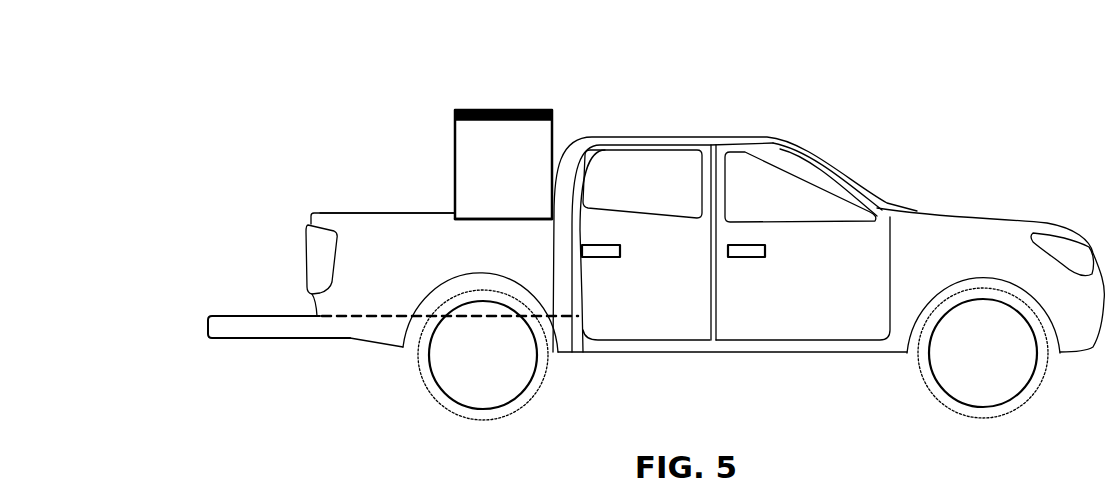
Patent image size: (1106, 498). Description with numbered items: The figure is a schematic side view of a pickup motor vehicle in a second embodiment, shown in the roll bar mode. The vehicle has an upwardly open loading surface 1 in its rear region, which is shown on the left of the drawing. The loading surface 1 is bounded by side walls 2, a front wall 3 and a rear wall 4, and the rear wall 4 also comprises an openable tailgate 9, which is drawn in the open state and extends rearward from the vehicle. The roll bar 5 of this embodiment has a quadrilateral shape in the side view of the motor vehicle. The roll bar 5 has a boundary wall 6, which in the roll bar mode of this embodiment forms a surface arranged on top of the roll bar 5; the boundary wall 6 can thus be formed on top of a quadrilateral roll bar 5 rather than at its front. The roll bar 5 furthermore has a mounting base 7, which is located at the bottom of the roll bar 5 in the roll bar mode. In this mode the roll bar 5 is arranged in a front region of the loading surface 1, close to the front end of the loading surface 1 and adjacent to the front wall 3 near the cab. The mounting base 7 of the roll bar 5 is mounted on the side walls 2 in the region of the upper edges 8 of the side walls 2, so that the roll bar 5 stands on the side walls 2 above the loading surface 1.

The loading surface 1 is at (372, 316).
The side walls 2 is at (400, 235).
The front wall 3 is at (568, 303).
The rear wall 4 is at (308, 230).
The roll bar 5 is at (485, 152).
The boundary wall 6 is at (520, 108).
The mounting base 7 is at (475, 219).
The upper edges 8 is at (435, 212).
The tailgate 9 is at (260, 329).